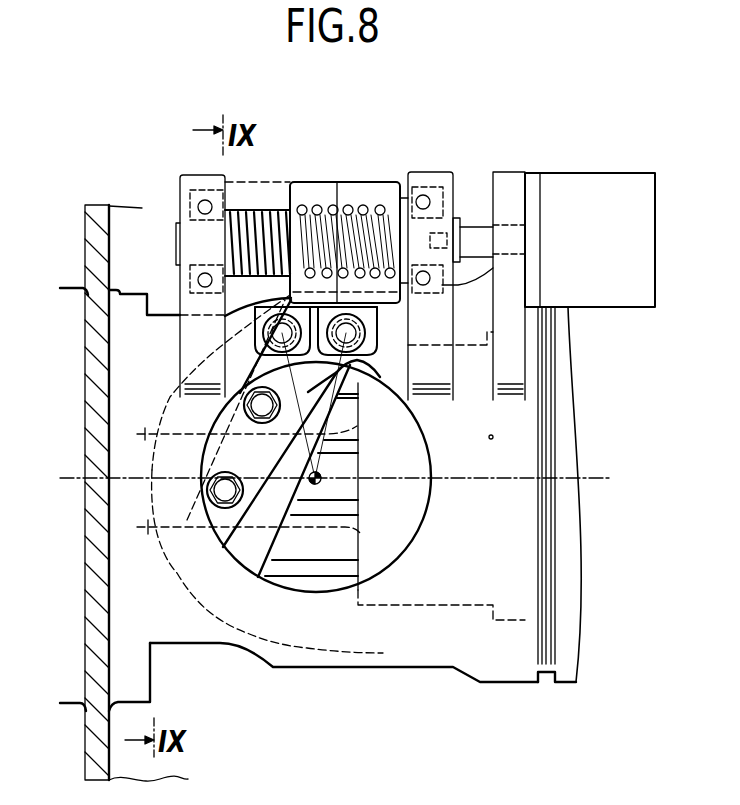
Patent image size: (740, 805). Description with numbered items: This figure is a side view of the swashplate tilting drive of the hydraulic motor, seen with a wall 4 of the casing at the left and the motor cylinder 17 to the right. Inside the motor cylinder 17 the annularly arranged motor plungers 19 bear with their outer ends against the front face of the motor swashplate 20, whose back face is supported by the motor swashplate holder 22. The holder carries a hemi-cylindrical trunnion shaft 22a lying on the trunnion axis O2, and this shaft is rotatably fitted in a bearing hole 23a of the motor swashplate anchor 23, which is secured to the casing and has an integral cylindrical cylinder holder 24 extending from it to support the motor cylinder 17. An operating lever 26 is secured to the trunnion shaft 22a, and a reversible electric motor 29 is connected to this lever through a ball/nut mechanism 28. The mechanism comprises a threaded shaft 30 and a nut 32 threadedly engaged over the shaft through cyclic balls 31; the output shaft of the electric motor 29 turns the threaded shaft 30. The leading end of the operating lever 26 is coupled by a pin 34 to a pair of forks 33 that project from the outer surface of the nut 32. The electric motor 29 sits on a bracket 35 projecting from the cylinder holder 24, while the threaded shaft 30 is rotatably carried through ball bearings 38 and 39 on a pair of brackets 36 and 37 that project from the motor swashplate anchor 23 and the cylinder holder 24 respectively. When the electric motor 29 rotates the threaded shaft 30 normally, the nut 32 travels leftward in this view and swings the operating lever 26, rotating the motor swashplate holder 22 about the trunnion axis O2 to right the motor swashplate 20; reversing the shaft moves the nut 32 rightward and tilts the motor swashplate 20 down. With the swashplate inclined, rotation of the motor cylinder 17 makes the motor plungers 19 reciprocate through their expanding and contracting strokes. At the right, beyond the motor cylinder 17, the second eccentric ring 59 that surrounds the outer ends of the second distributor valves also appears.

The wall 4 is at (95, 206).
The motor cylinder 17 is at (418, 606).
The motor plungers 19 is at (348, 412).
The motor swashplate 20 is at (282, 516).
The motor swashplate holder 22 is at (186, 574).
The trunnion shaft 22a is at (225, 443).
The motor swashplate anchor 23 is at (188, 636).
The bearing hole 23a is at (303, 590).
The cylinder holder 24 is at (452, 664).
The operating lever 26 is at (362, 373).
The ball/nut mechanism 28 is at (353, 176).
The reversible electric motor 29 is at (604, 252).
The threaded shaft 30 is at (258, 220).
The cyclic balls 31 is at (317, 208).
The nut 32 is at (377, 190).
The forks 33 is at (376, 328).
The pin 34 is at (380, 344).
The bracket 35 is at (509, 183).
The bracket 36 is at (188, 182).
The bracket 37 is at (433, 180).
The ball bearing 38 is at (198, 208).
The ball bearing 39 is at (438, 205).
The second eccentric ring 59 is at (513, 677).
The trunnion axis O2 is at (321, 474).